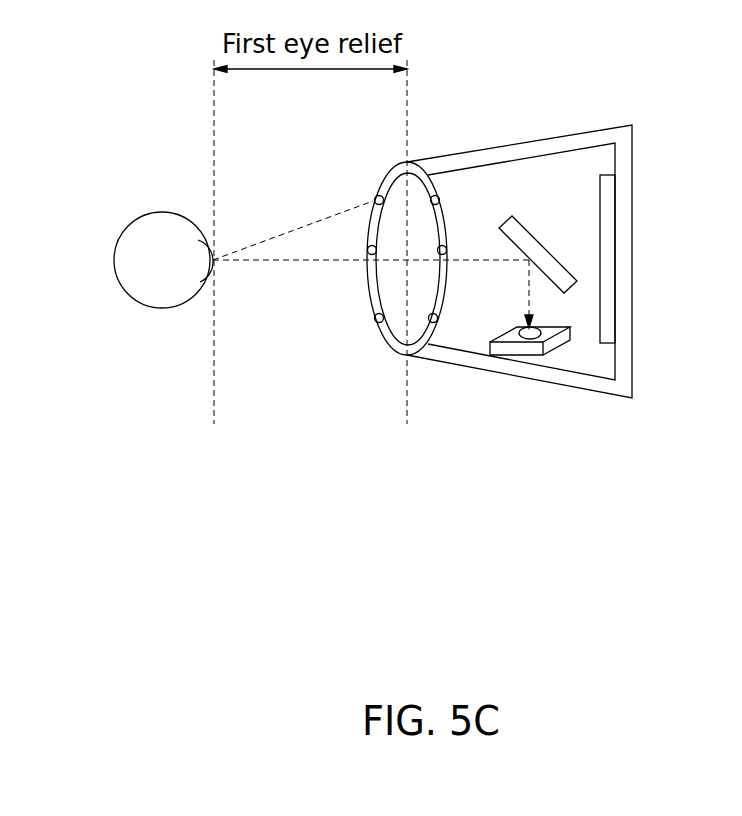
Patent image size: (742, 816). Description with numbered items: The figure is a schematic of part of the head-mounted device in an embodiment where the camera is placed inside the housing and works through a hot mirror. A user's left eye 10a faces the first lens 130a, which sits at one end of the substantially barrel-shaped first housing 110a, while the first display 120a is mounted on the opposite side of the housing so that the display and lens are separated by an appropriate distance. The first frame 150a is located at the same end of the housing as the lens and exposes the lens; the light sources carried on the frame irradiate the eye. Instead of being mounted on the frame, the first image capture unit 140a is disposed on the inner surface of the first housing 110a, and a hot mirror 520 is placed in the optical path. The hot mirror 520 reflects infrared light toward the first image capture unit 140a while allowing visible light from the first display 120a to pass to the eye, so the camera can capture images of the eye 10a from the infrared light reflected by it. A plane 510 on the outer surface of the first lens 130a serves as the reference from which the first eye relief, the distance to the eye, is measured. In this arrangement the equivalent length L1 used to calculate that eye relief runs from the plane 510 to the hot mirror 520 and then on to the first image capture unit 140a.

The left eye 10a is at (113, 261).
The plane 510 is at (407, 93).
The first housing 110a is at (598, 128).
The first lens 130a is at (415, 322).
The first frame 150a is at (445, 205).
The hot mirror 520 is at (520, 226).
The first display 120a is at (610, 262).
The equivalent length L1 is at (529, 297).
The first image capture unit 140a is at (527, 352).